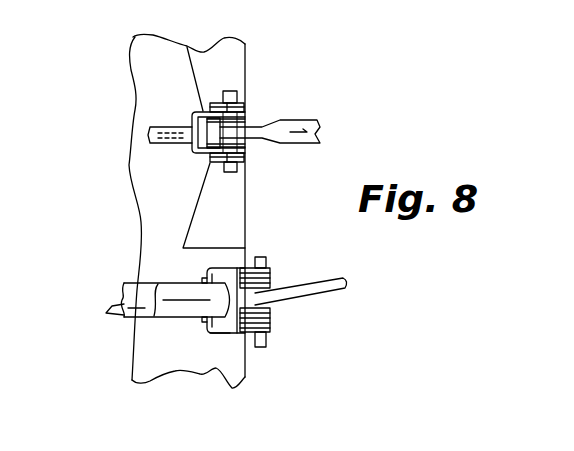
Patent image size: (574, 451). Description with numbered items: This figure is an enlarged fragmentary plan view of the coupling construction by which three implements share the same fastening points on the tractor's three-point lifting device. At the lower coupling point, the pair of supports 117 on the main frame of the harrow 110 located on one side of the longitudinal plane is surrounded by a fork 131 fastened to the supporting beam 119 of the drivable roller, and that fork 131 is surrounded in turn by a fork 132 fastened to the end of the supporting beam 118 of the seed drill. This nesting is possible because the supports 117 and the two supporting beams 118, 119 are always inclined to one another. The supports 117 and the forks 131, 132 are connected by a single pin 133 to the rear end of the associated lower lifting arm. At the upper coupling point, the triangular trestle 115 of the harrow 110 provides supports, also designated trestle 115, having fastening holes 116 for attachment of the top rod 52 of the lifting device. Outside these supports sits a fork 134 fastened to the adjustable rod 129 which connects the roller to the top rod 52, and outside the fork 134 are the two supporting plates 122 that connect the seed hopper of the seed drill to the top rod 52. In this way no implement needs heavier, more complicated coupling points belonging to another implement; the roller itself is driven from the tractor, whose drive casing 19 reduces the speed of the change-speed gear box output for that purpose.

The harrow 110 is at (134, 100).
The trestle 115 is at (213, 205).
The fork 134 is at (192, 113).
The rod 129 is at (150, 138).
The fastening holes 116 is at (233, 91).
The supporting plates 122 is at (247, 104).
The top rod 52 is at (329, 127).
The supporting beam 118 is at (190, 273).
The supporting beam 119 is at (115, 310).
The fork 131 is at (205, 323).
The fork 132 is at (223, 329).
The supports 117 is at (271, 280).
The drive casing 19 is at (331, 278).
The pin 133 is at (262, 348).